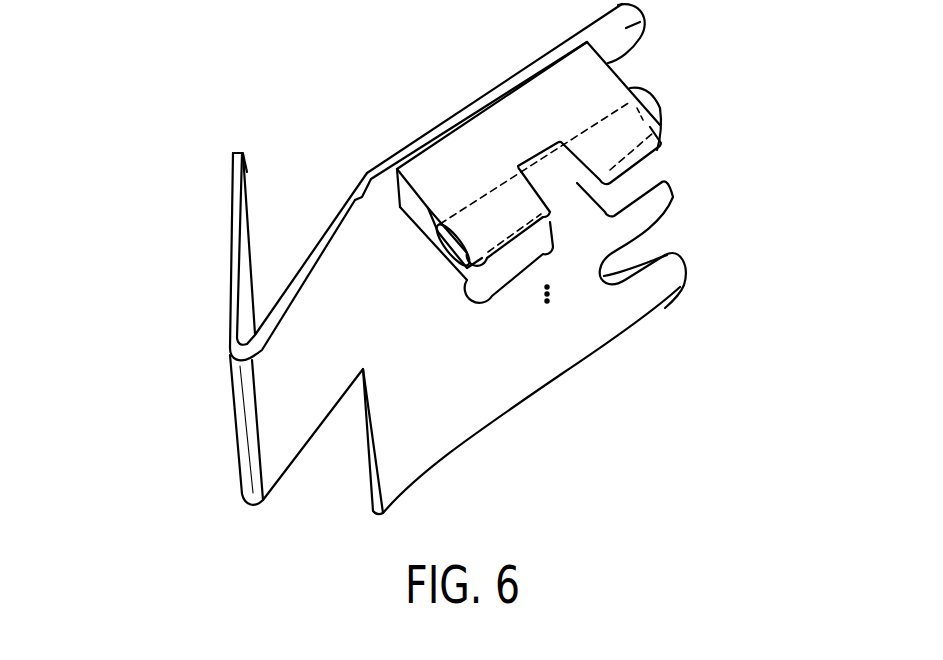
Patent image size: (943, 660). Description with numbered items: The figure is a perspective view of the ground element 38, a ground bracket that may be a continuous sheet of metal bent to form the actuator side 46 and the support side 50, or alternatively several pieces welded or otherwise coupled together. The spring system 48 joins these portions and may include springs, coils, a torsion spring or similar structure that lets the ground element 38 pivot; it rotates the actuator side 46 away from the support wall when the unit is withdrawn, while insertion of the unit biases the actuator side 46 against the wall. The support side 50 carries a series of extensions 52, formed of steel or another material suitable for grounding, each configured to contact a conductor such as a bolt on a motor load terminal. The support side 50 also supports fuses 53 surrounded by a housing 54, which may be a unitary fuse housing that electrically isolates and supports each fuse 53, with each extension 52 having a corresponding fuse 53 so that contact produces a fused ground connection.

The ground element 38 is at (192, 155).
The actuator side 46 is at (247, 292).
The spring system 48 is at (230, 422).
The support side 50 is at (443, 423).
The extensions 52 is at (658, 100).
The fuse 53 is at (667, 125).
The housing 54 is at (524, 112).